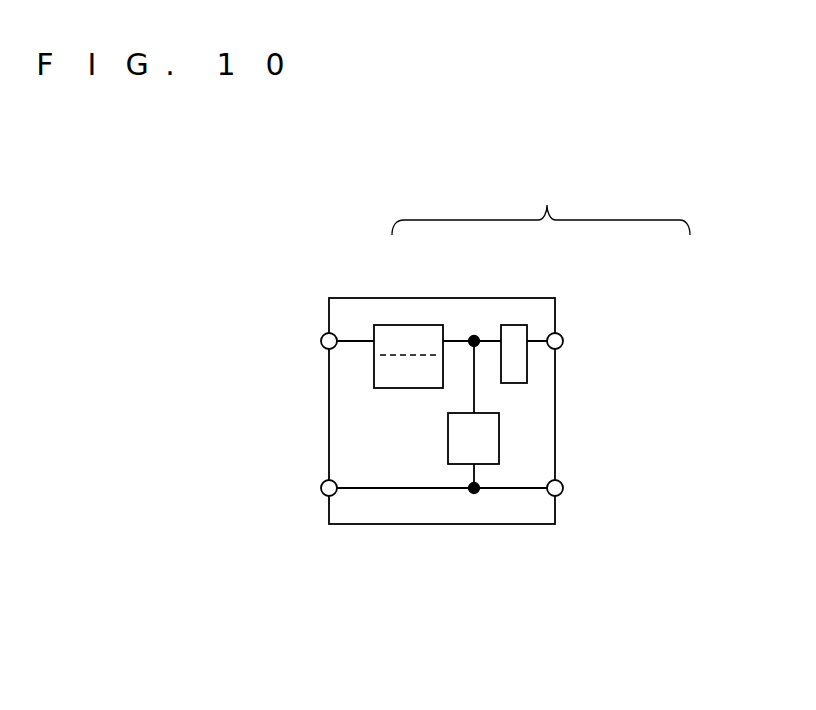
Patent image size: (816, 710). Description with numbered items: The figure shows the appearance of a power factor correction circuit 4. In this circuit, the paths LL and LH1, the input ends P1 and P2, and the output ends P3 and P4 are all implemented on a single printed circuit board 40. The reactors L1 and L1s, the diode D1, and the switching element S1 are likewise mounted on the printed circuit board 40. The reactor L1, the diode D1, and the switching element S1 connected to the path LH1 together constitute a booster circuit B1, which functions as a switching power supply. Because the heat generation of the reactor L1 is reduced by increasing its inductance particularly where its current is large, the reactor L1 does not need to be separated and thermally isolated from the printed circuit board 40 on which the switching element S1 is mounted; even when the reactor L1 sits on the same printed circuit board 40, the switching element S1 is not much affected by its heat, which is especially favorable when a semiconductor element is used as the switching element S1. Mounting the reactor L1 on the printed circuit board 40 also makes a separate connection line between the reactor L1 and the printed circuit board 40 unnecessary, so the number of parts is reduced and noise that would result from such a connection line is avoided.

The power factor correction circuit 4 is at (442, 463).
The printed circuit board 40 is at (372, 524).
The booster circuit B1 is at (532, 317).
The reactor L1 is at (410, 333).
The reactor L1s is at (425, 370).
The diode D1 is at (515, 335).
The switching element S1 is at (488, 430).
The path LH1 is at (455, 343).
The path LL is at (385, 486).
The input end P1 is at (321, 341).
The input end P2 is at (321, 488).
The output end P3 is at (563, 341).
The output end P4 is at (563, 488).